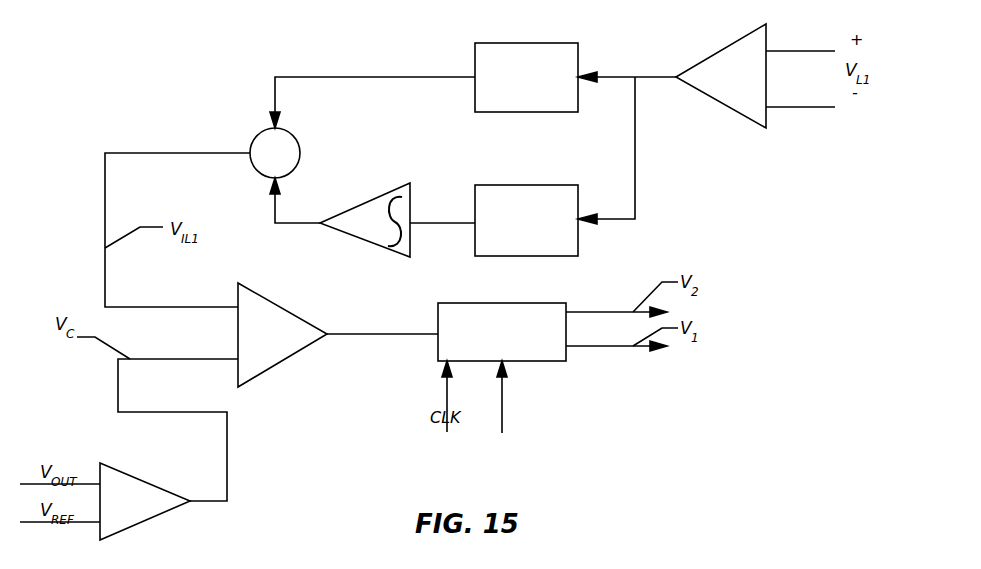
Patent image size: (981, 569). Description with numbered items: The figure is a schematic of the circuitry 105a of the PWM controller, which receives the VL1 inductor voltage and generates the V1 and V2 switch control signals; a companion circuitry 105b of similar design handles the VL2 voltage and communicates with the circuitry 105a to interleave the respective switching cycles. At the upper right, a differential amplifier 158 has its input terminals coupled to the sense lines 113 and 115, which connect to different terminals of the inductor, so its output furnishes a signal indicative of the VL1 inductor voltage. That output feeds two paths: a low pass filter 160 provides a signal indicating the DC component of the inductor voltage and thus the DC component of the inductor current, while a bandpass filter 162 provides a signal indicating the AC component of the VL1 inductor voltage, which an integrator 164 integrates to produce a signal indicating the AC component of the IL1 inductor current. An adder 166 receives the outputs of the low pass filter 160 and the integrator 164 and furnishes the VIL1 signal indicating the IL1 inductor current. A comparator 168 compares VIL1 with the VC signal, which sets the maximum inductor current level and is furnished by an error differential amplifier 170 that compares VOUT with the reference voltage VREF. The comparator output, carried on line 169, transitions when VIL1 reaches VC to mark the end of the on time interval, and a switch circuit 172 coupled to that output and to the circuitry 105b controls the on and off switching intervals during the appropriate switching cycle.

The circuitry 105a is at (735, 243).
The circuitry 105b is at (513, 420).
The sense line 113 is at (793, 51).
The sense line 115 is at (793, 107).
The differential amplifier 158 is at (740, 33).
The low pass filter 160 is at (528, 43).
The bandpass filter 162 is at (532, 185).
The integrator 164 is at (383, 193).
The adder 166 is at (300, 147).
The comparator 168 is at (297, 313).
The comparator output line 169 is at (390, 334).
The error differential amplifier 170 is at (167, 515).
The switch circuit 172 is at (533, 361).